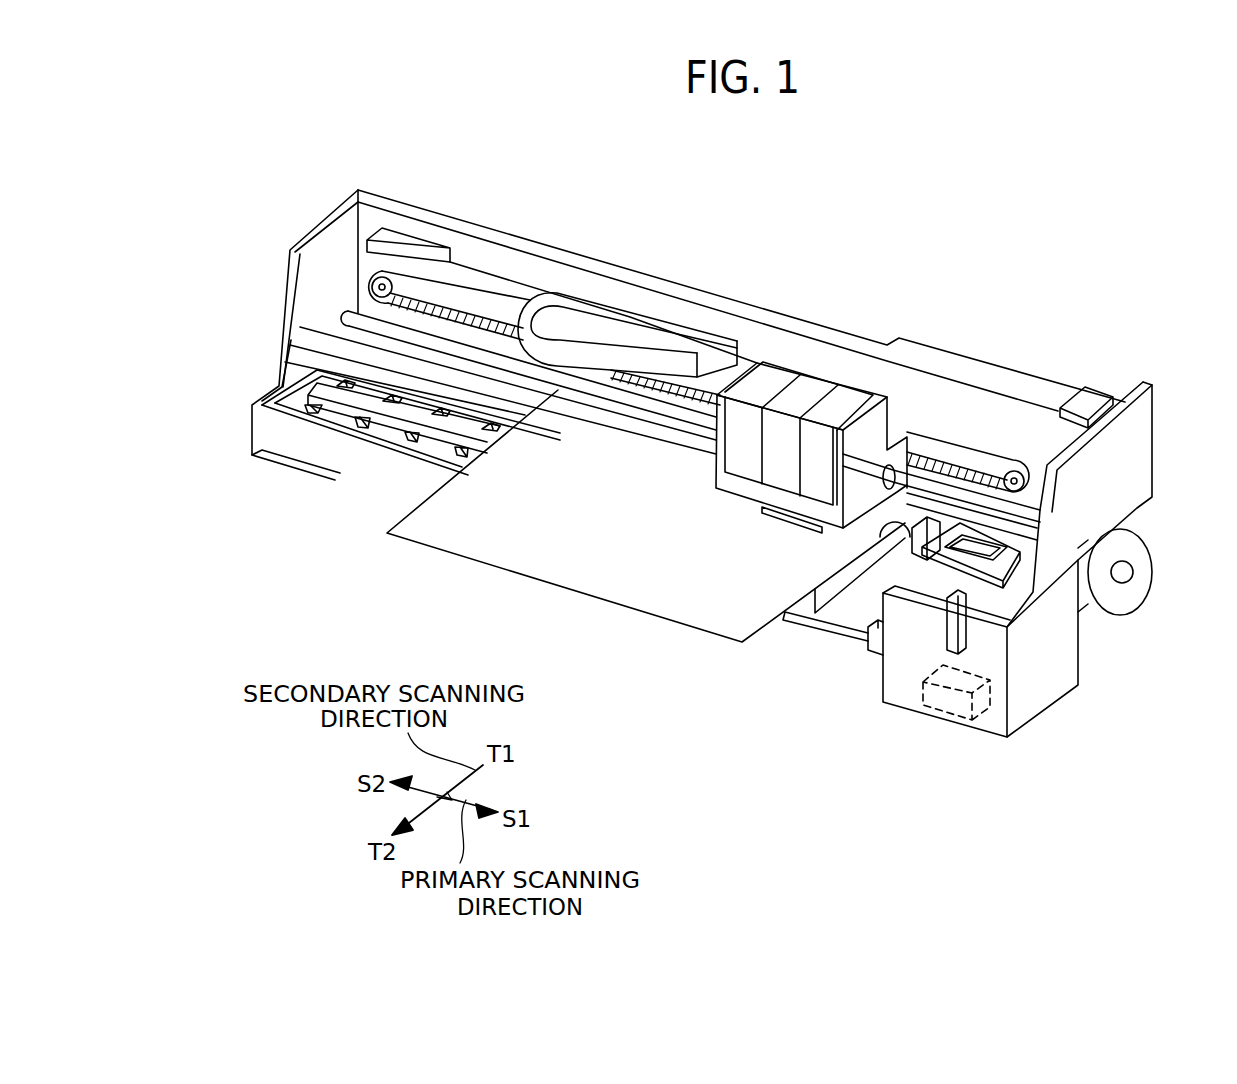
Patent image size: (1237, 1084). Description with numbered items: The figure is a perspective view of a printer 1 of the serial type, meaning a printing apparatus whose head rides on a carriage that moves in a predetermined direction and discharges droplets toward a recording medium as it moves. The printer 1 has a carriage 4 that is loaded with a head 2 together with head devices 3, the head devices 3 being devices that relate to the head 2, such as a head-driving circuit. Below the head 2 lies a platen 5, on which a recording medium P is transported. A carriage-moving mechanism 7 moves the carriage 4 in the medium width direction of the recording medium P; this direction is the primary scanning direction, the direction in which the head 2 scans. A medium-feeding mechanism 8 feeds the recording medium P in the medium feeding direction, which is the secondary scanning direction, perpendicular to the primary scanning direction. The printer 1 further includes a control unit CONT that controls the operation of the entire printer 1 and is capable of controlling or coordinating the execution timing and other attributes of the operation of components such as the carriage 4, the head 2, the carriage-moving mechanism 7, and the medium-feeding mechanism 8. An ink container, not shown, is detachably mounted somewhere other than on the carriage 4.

The printer 1 is at (628, 268).
The head 2 is at (777, 516).
The head devices 3 is at (845, 398).
The carriage 4 is at (880, 410).
The platen 5 is at (298, 402).
The carriage-moving mechanism 7 is at (1018, 423).
The medium-feeding mechanism 8 is at (1090, 626).
The recording medium P is at (428, 535).
The control unit CONT is at (937, 714).